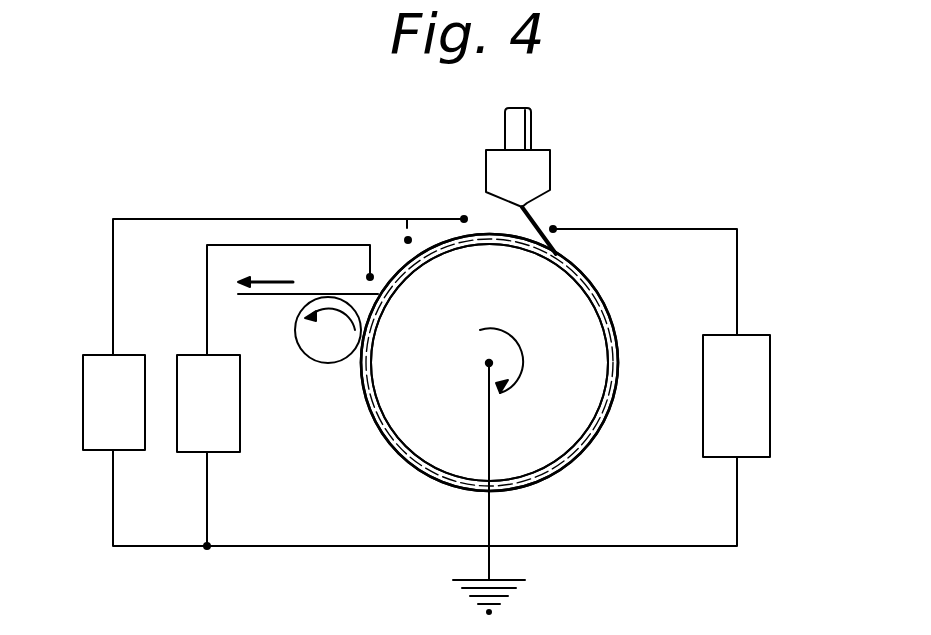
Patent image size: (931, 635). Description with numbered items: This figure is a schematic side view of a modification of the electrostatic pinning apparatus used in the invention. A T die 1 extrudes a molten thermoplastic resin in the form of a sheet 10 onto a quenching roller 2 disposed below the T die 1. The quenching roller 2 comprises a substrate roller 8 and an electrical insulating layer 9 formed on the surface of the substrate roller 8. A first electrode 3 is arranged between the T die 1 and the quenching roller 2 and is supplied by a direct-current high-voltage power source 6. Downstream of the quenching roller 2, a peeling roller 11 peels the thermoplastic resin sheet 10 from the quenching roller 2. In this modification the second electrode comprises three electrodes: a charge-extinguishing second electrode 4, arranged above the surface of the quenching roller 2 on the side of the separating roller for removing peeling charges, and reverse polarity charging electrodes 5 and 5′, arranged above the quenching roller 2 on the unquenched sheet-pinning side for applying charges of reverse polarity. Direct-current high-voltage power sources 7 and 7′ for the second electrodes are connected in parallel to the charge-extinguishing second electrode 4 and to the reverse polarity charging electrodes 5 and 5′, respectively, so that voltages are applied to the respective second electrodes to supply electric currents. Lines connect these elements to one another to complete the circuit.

The T die 1 is at (533, 168).
The quenching roller 2 is at (405, 462).
The first electrode 3 is at (553, 233).
The second electrode 4 is at (367, 276).
The second electrode 5 is at (463, 216).
The second electrode 5′ is at (406, 240).
The direct-current high-voltage power source 6 is at (755, 407).
The direct-current high-voltage power source 7 is at (240, 430).
The direct-current high-voltage power source 7′ is at (145, 440).
The substrate roller 8 is at (570, 415).
The electrical insulating layer 9 is at (543, 483).
The thermoplastic resin sheet 10 is at (530, 222).
The peeling roller 11 is at (327, 362).